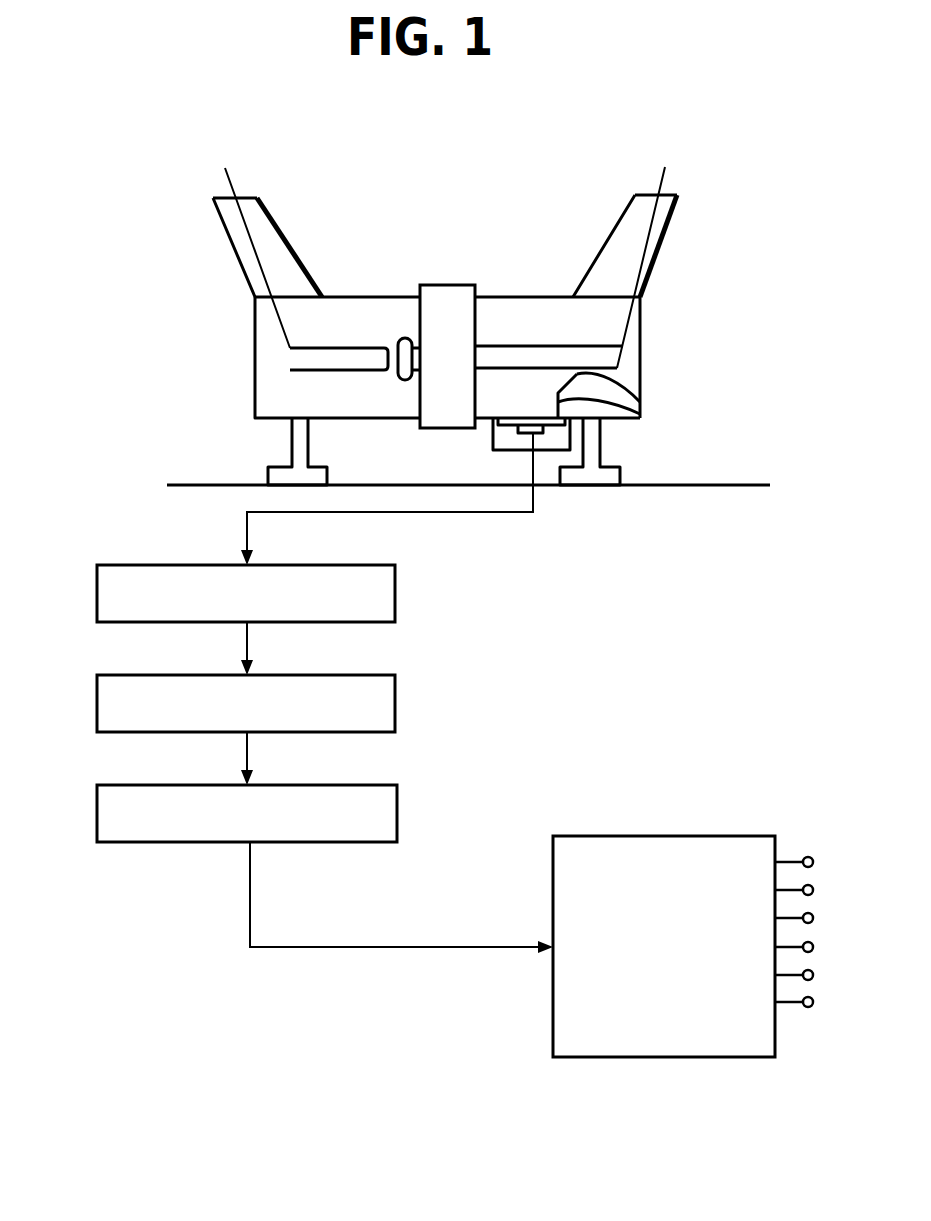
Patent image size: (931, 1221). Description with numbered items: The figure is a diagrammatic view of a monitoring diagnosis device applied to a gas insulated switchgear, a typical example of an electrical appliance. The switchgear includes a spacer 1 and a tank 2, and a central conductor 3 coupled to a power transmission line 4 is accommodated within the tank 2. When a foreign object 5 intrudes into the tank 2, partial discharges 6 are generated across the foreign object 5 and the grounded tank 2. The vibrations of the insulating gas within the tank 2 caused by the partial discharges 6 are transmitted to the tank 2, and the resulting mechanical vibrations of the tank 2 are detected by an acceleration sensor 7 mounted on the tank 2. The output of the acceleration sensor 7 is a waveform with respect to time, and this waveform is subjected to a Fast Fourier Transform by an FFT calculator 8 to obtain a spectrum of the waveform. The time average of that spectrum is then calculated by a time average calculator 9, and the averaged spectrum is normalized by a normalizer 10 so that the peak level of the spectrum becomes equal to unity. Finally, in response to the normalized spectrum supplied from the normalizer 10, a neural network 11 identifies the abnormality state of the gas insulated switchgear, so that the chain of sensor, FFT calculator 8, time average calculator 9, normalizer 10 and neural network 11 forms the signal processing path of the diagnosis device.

The spacer 1 is at (420, 287).
The tank 2 is at (642, 313).
The central conductor 3 is at (622, 353).
The power transmission line 4 is at (653, 218).
The foreign object 5 is at (640, 391).
The partial discharges 6 is at (640, 416).
The acceleration sensor 7 is at (570, 432).
The FFT calculator 8 is at (397, 582).
The time average calculator 9 is at (396, 700).
The normalizer 10 is at (398, 805).
The neural network 11 is at (650, 836).